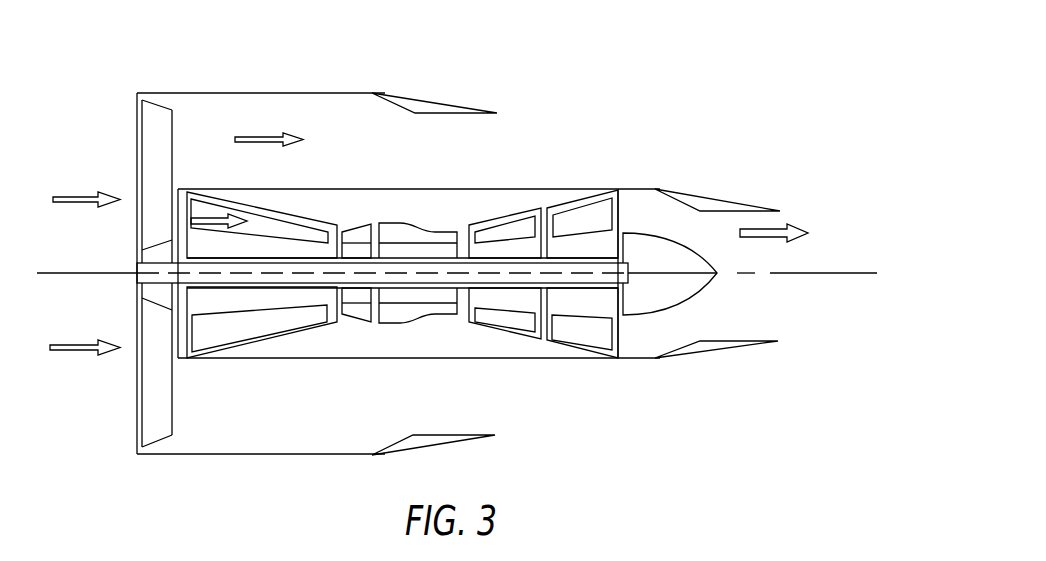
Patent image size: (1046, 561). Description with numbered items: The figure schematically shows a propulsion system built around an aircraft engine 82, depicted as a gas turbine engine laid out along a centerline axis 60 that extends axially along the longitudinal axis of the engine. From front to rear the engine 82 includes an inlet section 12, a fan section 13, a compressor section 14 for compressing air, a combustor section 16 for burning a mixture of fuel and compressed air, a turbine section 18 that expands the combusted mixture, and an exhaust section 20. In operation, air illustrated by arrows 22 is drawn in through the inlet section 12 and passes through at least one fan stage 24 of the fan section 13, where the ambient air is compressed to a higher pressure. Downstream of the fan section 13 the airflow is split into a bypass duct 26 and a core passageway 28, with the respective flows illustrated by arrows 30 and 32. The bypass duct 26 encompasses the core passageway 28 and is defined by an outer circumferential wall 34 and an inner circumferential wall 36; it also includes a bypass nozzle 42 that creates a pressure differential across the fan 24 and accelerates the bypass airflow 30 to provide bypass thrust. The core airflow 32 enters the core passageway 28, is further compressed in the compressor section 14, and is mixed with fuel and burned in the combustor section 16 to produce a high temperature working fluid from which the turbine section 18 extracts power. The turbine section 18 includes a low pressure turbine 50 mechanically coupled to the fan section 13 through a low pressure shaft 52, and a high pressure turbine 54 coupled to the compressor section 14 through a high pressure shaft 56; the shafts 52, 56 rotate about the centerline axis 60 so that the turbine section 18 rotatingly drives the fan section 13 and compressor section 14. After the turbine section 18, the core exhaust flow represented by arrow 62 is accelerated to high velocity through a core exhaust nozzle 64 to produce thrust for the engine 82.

The inlet section 12 is at (137, 148).
The fan section 13 is at (155, 398).
The compressor section 14 is at (296, 195).
The combustor section 16 is at (405, 343).
The turbine section 18 is at (540, 180).
The exhaust section 20 is at (764, 175).
The arrows (inlet air) 22 is at (73, 205).
The fan stage 24 is at (155, 123).
The bypass duct 26 is at (233, 112).
The core passageway 28 is at (215, 328).
The arrows (bypass airflow) 30 is at (252, 145).
The arrows (core airflow) 32 is at (203, 215).
The outer circumferential wall 34 is at (370, 93).
The inner circumferential wall 36 is at (390, 188).
The bypass nozzle 42 is at (483, 107).
The low pressure turbine 50 is at (596, 213).
The low pressure shaft 52 is at (315, 275).
The high pressure turbine 54 is at (507, 228).
The high pressure shaft 56 is at (463, 290).
The centerline axis 60 is at (822, 275).
The arrow (core exhaust flow) 62 is at (755, 237).
The core exhaust nozzle 64 is at (722, 345).
The aircraft engine 82 is at (578, 74).